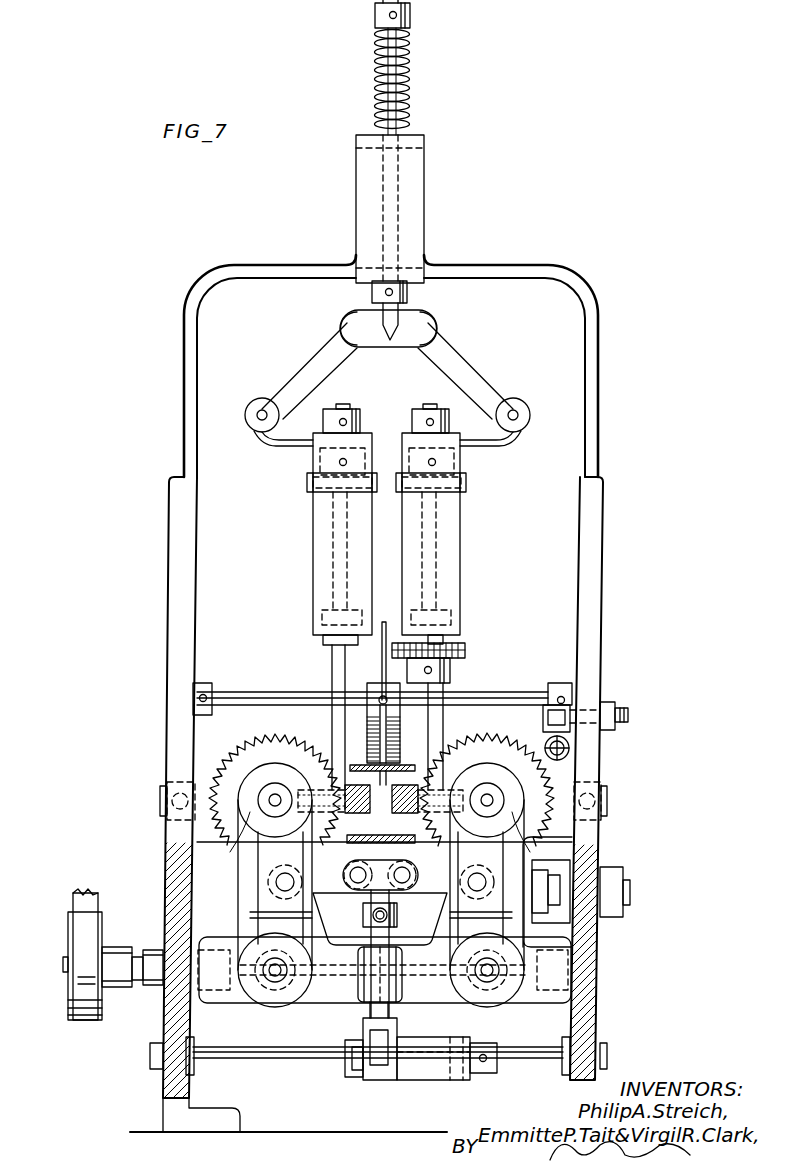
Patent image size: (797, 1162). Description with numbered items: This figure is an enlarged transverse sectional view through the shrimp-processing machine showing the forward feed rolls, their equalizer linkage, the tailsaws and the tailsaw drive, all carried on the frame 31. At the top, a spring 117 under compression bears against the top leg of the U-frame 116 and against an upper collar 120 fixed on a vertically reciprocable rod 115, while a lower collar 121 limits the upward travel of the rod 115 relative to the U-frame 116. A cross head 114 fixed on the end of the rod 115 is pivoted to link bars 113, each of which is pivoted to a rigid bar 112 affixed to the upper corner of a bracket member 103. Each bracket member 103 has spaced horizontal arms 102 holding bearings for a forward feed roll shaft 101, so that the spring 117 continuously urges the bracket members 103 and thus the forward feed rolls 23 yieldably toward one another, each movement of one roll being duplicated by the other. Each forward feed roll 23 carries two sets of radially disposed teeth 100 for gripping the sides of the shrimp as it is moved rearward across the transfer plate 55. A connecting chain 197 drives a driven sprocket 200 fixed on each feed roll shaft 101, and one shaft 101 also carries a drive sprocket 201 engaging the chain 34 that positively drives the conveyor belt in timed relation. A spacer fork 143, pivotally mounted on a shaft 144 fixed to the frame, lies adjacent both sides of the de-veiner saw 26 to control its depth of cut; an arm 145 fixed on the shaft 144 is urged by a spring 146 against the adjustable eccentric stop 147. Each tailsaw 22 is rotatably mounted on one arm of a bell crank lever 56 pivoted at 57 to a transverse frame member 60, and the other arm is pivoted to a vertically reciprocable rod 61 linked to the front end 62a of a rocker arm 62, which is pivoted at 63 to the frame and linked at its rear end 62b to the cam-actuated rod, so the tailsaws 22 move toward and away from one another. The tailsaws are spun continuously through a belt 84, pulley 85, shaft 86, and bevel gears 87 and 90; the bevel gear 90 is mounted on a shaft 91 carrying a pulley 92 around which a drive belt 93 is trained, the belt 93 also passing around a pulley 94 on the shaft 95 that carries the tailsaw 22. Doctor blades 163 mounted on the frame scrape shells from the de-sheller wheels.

The upper collar 120 is at (410, 18).
The spring 117 is at (410, 76).
The U-frame 116 is at (412, 173).
The vertically reciprocable rod 115 is at (400, 216).
The lower collar 121 is at (372, 294).
The cross head 114 is at (420, 322).
The link bar 113 is at (305, 368).
The rigid bar 112 is at (265, 438).
The bracket member 103 is at (313, 550).
The horizontal arm 102 is at (320, 452).
The connecting chain 197 is at (307, 484).
The driven sprocket 200 is at (310, 492).
The forward feed roll shaft 101 is at (436, 597).
The chain 34 is at (465, 650).
The drive sprocket 201 is at (450, 665).
The de-veiner saw 26 is at (384, 622).
The shaft 144 is at (258, 692).
The spacer fork 143 is at (367, 692).
The frame 31 is at (169, 623).
The arm 145 is at (543, 720).
The adjustable eccentric stop 147 is at (565, 710).
The spring 146 is at (569, 744).
The tailsaw 22 is at (256, 738).
The shaft 95 is at (275, 795).
The forward feed roll 23 is at (330, 790).
The radially disposed teeth 100 is at (355, 813).
The transfer plate 55 is at (381, 827).
The pulley 94 is at (250, 806).
The doctor blade 163 is at (172, 812).
The drive belt 93 is at (245, 873).
The bell crank lever 56 is at (285, 872).
The pivot 57 is at (283, 884).
The vertically reciprocable rod 61 is at (397, 920).
The pulley 92 is at (238, 968).
The bevel gear 90 is at (265, 990).
The shaft 91 is at (278, 982).
The bevel gear 87 is at (525, 968).
The shaft 86 is at (408, 980).
The belt 84 is at (86, 893).
The pulley 85 is at (68, 930).
The transverse frame member 60 is at (322, 1003).
The pivot 63 is at (330, 1060).
The front end of rocker arm 62a is at (392, 1035).
The rear end of rocker arm 62b is at (448, 1075).
The rocker arm 62 is at (376, 1080).